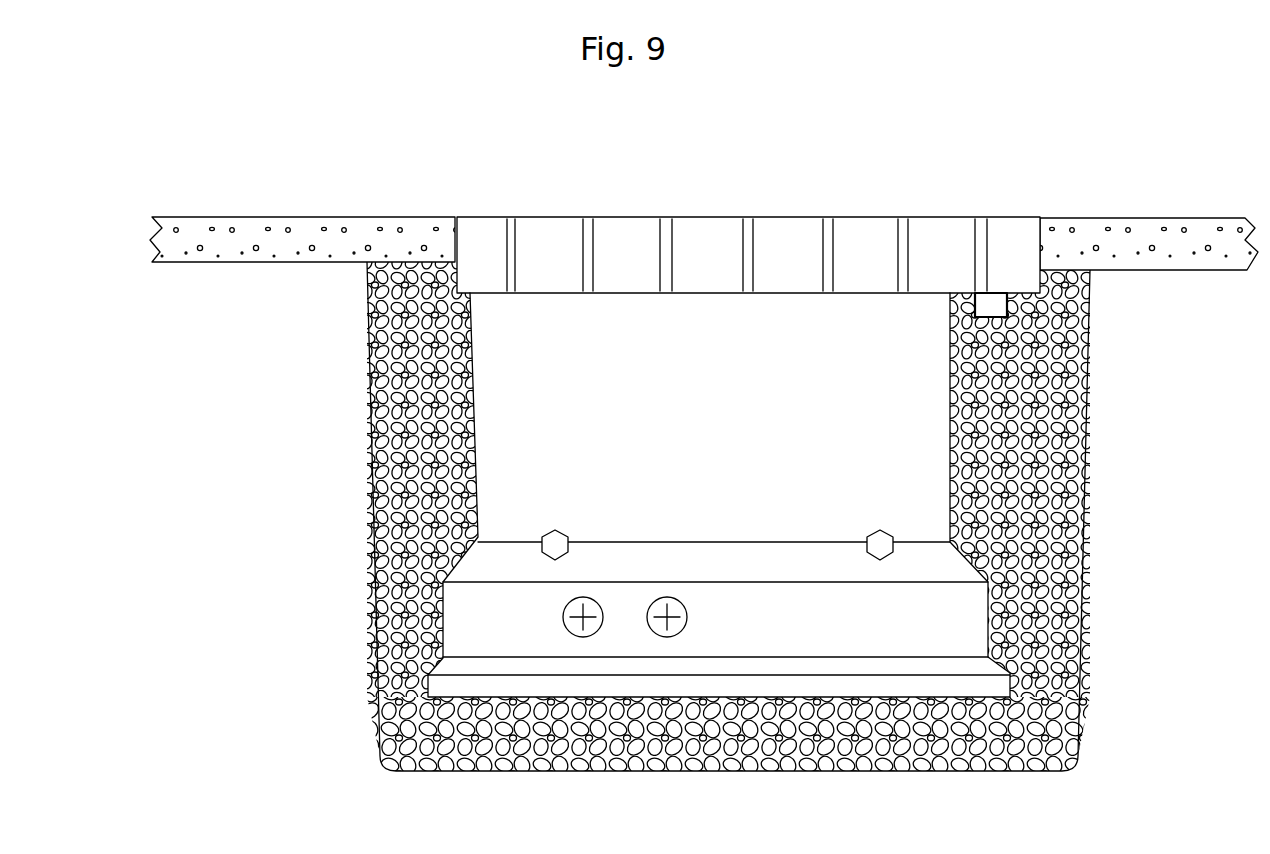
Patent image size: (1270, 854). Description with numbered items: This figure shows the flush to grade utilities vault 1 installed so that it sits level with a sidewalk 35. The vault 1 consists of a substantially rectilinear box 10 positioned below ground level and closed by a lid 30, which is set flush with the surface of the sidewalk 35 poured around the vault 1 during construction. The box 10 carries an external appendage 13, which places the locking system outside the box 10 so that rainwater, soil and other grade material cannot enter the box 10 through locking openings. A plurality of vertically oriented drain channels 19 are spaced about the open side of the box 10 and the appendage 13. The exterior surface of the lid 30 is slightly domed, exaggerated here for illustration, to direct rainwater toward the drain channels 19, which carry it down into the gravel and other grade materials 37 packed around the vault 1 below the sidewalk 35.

The flush to grade utilities vault 1 is at (716, 388).
The box 10 is at (500, 413).
The external appendage 13 is at (1022, 300).
The drain channels 19 is at (586, 218).
The lid 30 is at (777, 216).
The sidewalk 35 is at (272, 233).
The gravel and other grade materials 37 is at (407, 543).